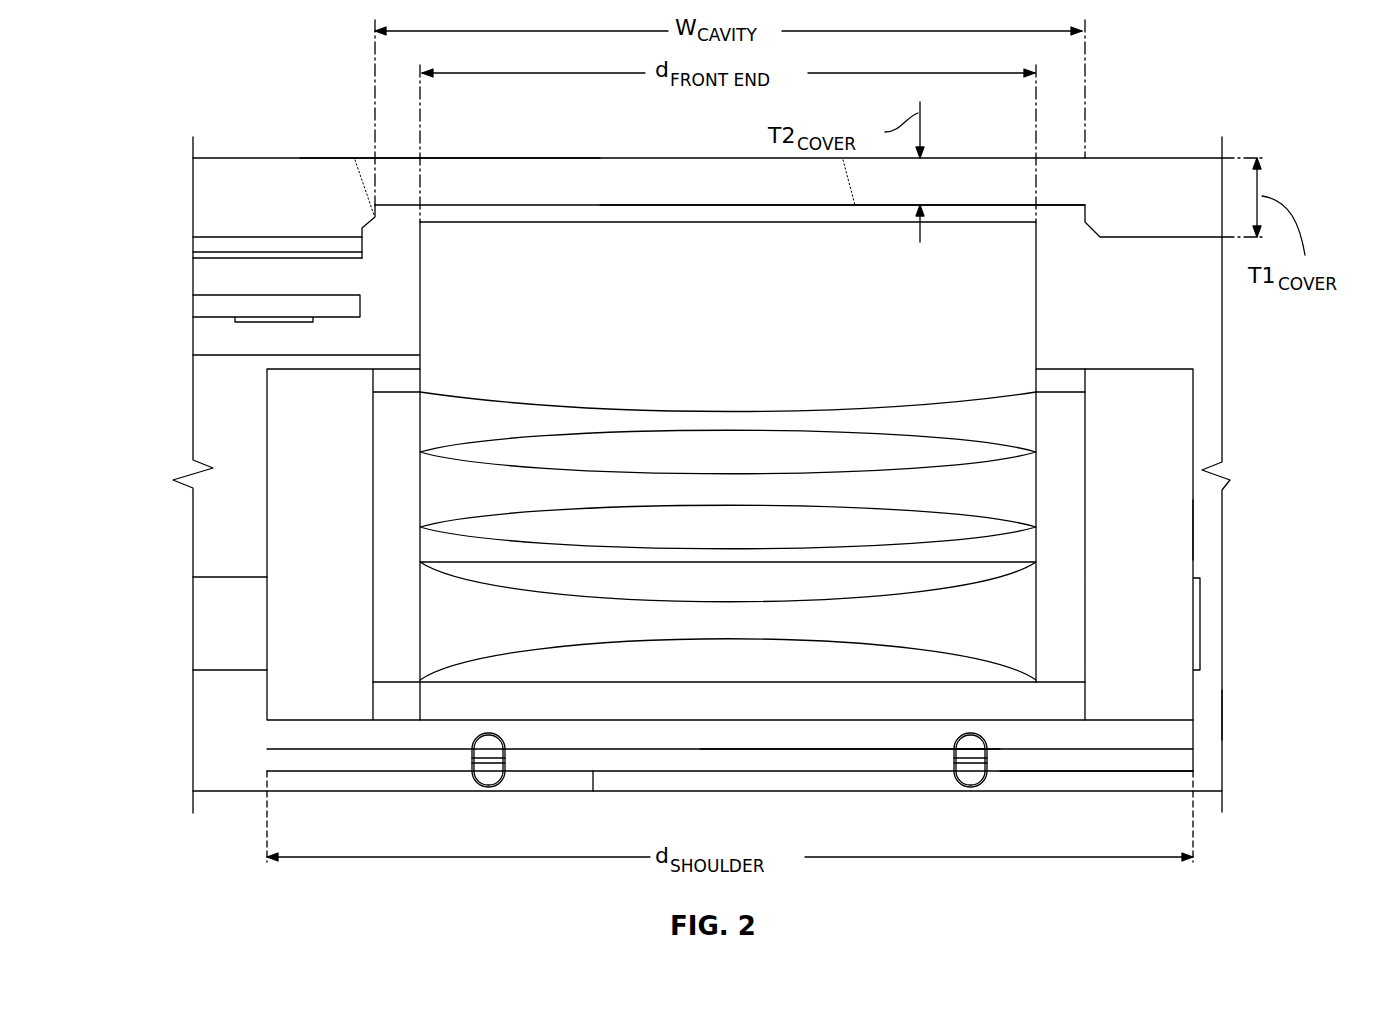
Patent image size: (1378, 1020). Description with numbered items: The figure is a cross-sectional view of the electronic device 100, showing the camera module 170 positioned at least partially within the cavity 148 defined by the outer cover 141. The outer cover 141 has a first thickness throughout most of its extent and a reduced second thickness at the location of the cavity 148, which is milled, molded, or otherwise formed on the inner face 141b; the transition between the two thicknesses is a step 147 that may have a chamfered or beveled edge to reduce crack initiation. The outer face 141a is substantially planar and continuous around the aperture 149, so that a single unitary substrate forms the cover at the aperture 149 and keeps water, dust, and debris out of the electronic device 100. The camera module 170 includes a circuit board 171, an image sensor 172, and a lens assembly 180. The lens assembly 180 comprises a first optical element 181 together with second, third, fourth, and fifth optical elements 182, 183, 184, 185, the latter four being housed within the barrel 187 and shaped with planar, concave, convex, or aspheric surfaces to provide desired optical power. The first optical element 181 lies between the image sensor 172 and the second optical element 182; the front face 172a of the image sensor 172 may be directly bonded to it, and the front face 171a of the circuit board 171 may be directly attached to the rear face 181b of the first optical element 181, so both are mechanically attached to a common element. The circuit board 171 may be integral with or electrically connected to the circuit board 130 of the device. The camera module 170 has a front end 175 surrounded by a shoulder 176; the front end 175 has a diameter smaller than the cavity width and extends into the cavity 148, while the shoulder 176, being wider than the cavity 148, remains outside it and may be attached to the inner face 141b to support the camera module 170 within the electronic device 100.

The electronic device 100 is at (1245, 68).
The outer cover 141 is at (1178, 157).
The outer face 141a is at (232, 157).
The inner face 141b is at (290, 242).
The step 147 is at (368, 213).
The cavity 148 is at (1053, 222).
The aperture 149 is at (982, 204).
The front end 175 is at (1035, 298).
The barrel 187 is at (1056, 392).
The shoulder 176 is at (1140, 369).
The fifth optical element 185 is at (420, 361).
The fourth optical element 184 is at (420, 447).
The third optical element 183 is at (420, 522).
The second optical element 182 is at (420, 675).
The first optical element 181 is at (288, 733).
The circuit board 171 is at (290, 763).
The image sensor 172 is at (556, 771).
The front face of image sensor 172a is at (912, 747).
The rear face of first optical element 181b is at (845, 750).
The front face of circuit board 171a is at (1078, 747).
The circuit board 130 is at (225, 577).
The lens assembly 180 is at (1200, 515).
The camera module 170 is at (1205, 705).